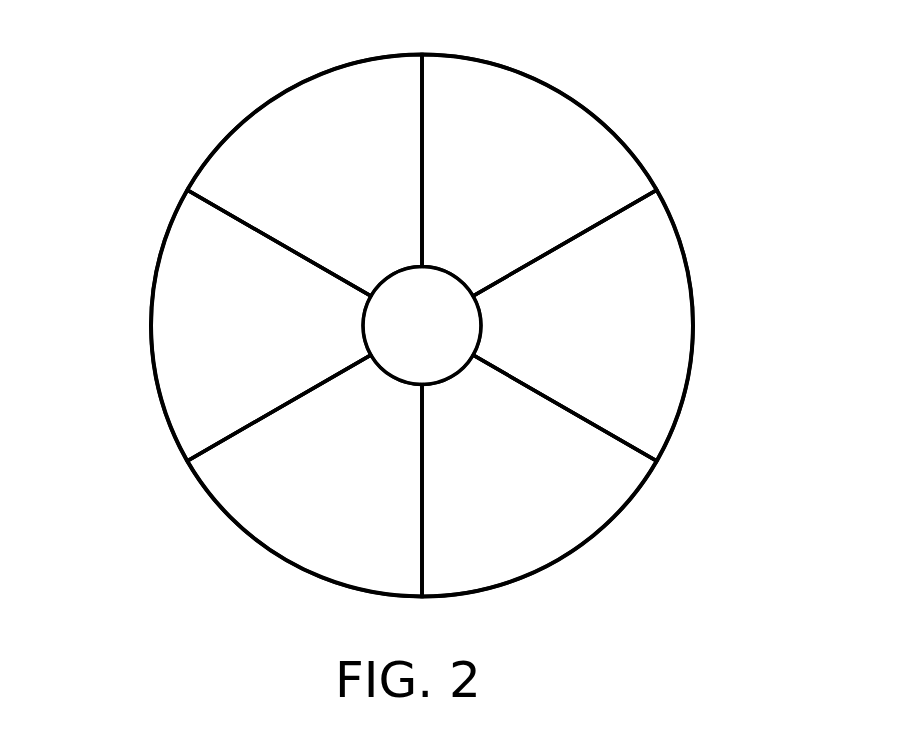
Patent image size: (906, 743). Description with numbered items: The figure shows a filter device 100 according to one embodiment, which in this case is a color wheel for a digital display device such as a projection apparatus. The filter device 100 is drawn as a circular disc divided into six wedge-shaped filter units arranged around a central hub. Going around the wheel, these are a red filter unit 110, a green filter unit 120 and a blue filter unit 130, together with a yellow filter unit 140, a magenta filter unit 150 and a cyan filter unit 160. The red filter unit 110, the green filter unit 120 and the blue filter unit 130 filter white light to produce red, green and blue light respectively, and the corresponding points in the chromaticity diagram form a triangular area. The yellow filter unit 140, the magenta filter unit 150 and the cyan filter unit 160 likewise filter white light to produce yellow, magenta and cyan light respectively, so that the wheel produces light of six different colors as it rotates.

The filter device 100 is at (762, 655).
The red filter unit 110 is at (333, 132).
The green filter unit 120 is at (203, 338).
The blue filter unit 130 is at (347, 537).
The yellow filter unit 140 is at (542, 527).
The magenta filter unit 150 is at (638, 330).
The cyan filter unit 160 is at (523, 143).